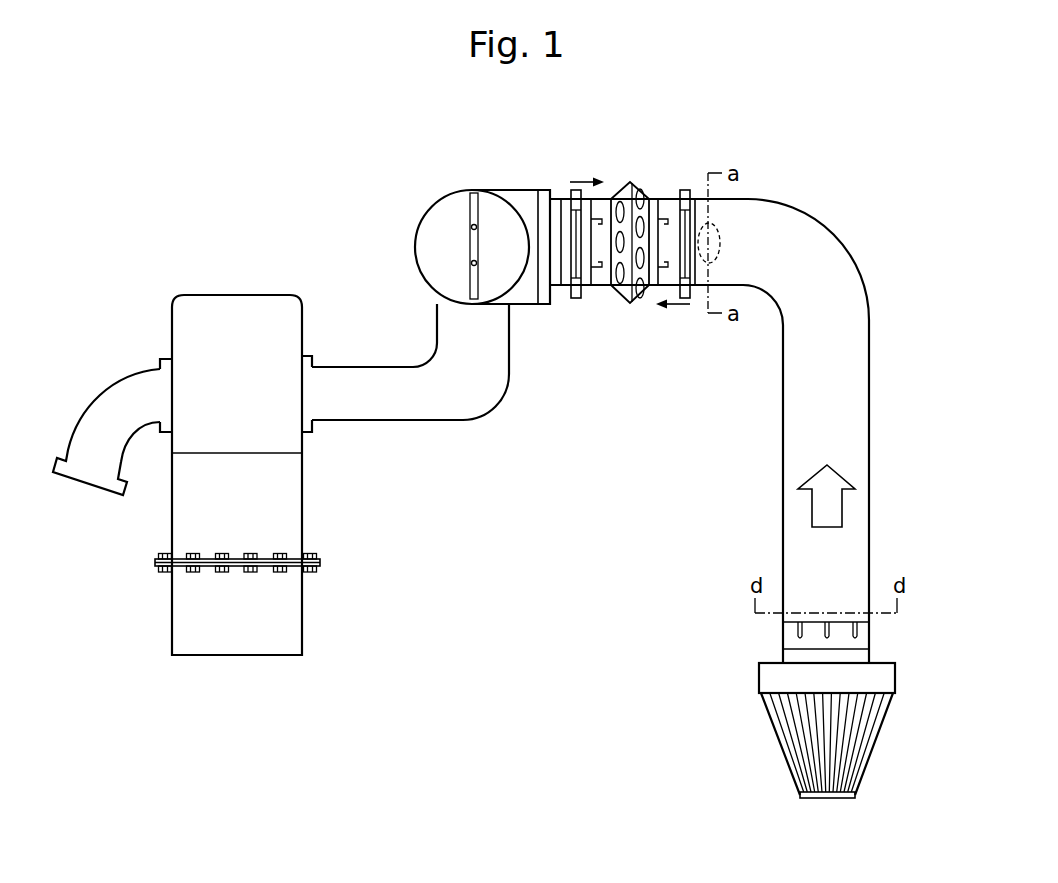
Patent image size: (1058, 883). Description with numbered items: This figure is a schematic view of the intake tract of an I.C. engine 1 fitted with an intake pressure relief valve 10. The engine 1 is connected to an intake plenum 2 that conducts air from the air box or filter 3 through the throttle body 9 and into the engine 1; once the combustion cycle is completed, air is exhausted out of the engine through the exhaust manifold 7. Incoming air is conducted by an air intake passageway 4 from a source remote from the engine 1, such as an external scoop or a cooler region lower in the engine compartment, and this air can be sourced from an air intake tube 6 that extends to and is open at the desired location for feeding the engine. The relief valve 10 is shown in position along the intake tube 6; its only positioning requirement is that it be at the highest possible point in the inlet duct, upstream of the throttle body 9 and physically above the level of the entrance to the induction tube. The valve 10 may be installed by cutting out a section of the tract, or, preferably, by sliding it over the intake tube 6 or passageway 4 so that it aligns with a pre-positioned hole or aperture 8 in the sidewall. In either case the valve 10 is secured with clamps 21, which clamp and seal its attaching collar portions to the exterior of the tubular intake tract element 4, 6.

The I.C. engine 1 is at (246, 400).
The intake plenum 2 is at (481, 359).
The air box or filter 3 is at (857, 752).
The air intake passageway 4 is at (834, 192).
The air intake tube 6 is at (833, 406).
The exhaust manifold 7 is at (118, 431).
The hole or aperture 8 is at (720, 243).
The throttle body 9 is at (437, 196).
The relief valve 10 is at (622, 170).
The clamps 21 is at (683, 187).